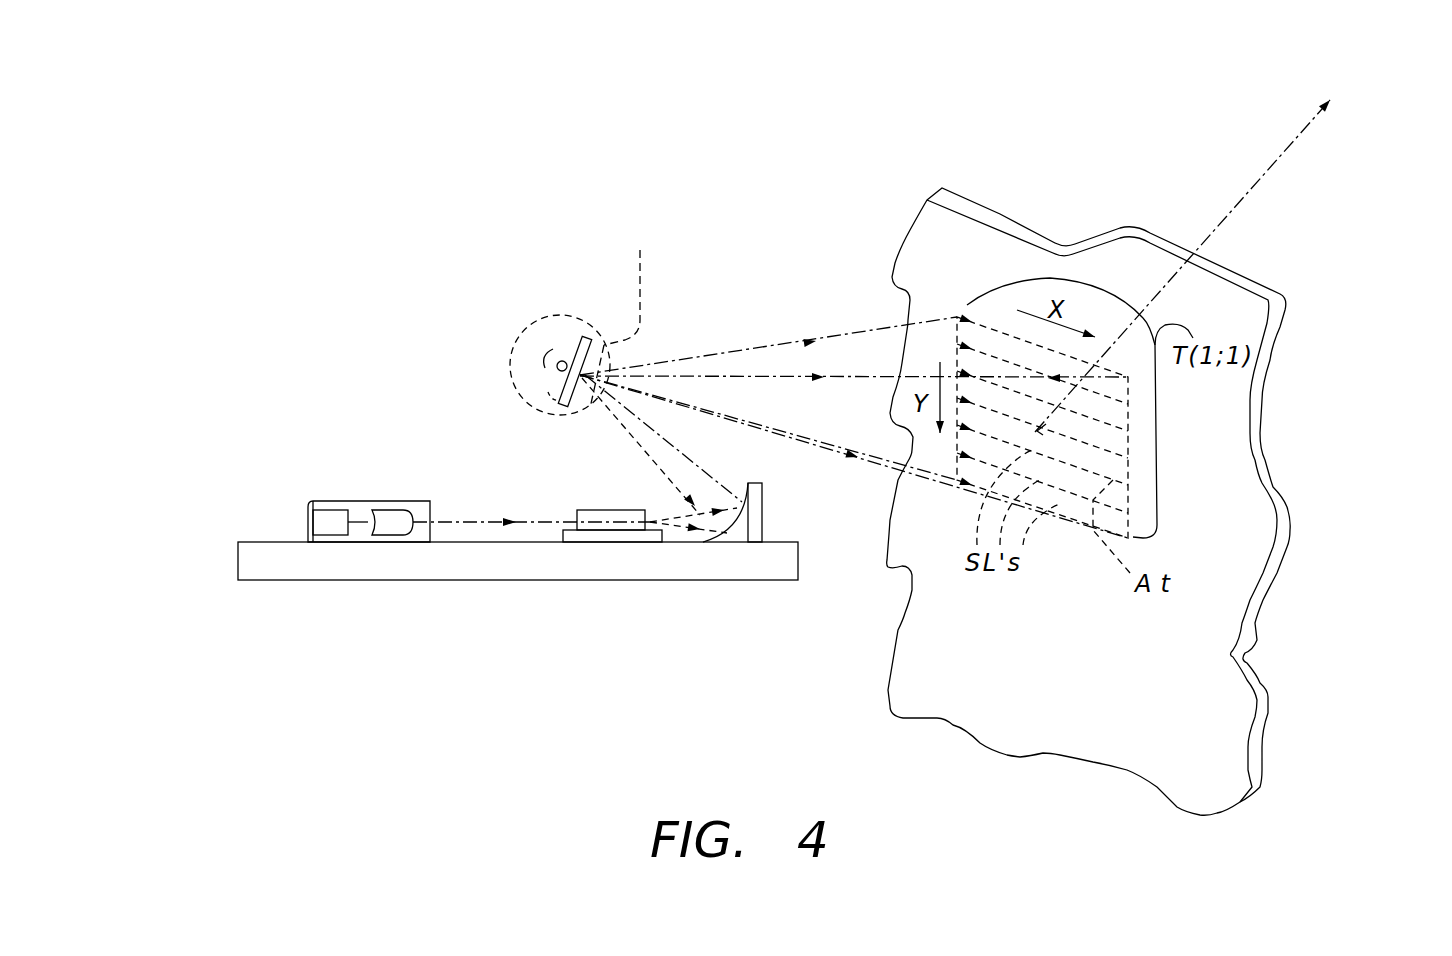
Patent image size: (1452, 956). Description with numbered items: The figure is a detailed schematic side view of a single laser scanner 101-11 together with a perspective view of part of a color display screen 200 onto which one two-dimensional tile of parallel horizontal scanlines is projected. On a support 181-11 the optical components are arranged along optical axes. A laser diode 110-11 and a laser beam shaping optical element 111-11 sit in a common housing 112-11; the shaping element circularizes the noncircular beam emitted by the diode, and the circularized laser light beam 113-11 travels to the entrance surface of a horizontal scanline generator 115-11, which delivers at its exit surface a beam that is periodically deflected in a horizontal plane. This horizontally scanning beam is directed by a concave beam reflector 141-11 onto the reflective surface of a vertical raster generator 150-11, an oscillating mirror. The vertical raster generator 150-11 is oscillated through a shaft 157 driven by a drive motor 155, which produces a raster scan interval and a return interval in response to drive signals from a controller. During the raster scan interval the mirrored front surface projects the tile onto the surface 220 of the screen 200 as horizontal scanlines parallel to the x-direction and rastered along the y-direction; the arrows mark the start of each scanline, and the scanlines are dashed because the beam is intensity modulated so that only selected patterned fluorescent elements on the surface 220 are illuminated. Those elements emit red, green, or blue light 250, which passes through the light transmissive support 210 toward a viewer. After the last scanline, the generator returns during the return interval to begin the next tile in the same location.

The laser scanner 101-11 is at (473, 596).
The support 181-11 is at (268, 562).
The laser diode 110-11 is at (320, 522).
The common housing 112-11 is at (345, 500).
The laser beam shaping optical element 111-11 is at (395, 515).
The laser light beam 113-11 is at (485, 520).
The horizontal scanline generator 115-11 is at (603, 527).
The concave beam reflector 141-11 is at (740, 507).
The drive motor 155 is at (523, 328).
The vertical raster generator 150-11 is at (584, 330).
The shaft 157 is at (560, 378).
The color display screen 200 is at (965, 172).
The light transmissive support 210 is at (1062, 243).
The surface of patterned fluorescent elements 220 is at (1248, 318).
The emitted light 250 is at (1297, 140).